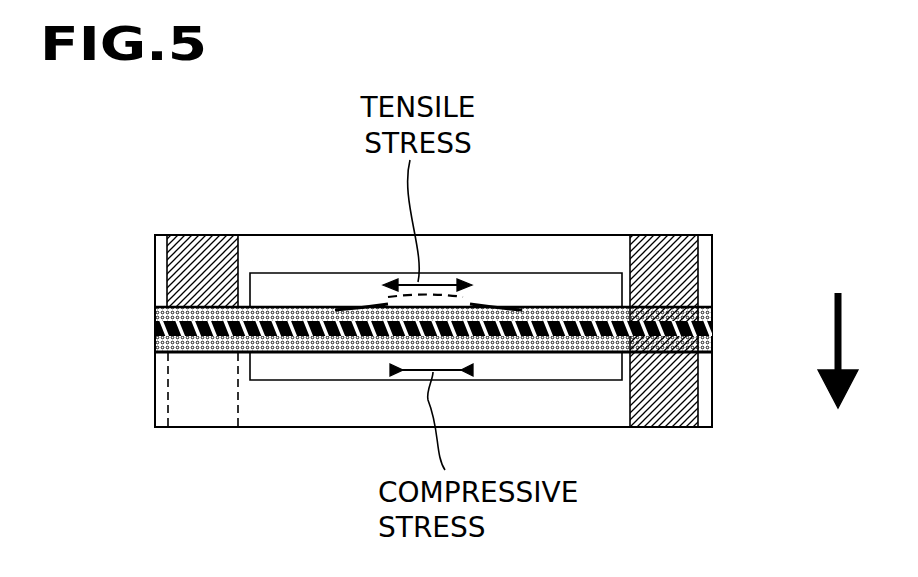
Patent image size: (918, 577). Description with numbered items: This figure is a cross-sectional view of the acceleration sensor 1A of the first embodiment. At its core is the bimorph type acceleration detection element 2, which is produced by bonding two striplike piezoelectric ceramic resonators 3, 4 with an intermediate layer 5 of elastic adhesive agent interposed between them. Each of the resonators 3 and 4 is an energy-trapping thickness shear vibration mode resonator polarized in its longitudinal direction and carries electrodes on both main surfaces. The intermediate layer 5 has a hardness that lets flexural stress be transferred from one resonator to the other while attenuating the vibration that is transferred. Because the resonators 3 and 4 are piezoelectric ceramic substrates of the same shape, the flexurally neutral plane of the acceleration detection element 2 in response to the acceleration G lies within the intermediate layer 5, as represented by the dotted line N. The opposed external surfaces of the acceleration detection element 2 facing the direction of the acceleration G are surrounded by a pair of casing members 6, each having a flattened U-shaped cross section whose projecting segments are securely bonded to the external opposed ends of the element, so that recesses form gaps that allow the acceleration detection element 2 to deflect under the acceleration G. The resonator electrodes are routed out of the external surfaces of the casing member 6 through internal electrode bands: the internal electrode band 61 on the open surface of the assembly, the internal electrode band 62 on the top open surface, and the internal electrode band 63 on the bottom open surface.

The acceleration sensor 1A is at (122, 247).
The acceleration detection element 2 is at (433, 222).
The piezoelectric ceramic resonator 3 is at (590, 306).
The piezoelectric ceramic resonator 4 is at (503, 306).
The intermediate layer 5 is at (548, 318).
The casing member 6 is at (280, 247).
The internal electrode band 61 is at (660, 235).
The internal electrode band 62 is at (178, 235).
The internal electrode band 63 is at (155, 390).
The dotted line N is at (340, 306).
The acceleration G is at (838, 326).